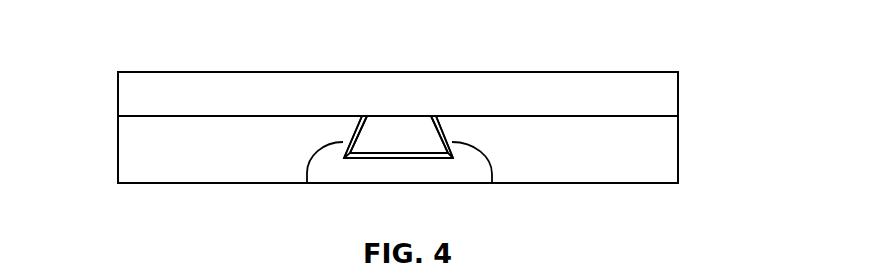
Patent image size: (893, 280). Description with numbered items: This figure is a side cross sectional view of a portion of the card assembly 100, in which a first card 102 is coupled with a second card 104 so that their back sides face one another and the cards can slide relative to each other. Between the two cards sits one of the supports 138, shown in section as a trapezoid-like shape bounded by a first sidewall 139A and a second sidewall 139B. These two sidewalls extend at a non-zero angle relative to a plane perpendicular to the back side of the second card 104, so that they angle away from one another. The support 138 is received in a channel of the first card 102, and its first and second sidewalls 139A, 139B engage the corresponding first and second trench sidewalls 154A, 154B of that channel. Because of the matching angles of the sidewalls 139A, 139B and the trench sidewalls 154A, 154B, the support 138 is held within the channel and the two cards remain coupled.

The assembly 100 is at (156, 30).
The first card 102 is at (665, 162).
The second card 104 is at (623, 87).
The support 138 is at (399, 126).
The first sidewall 139A is at (357, 132).
The second sidewall 139B is at (440, 131).
The first trench sidewall 154A is at (306, 183).
The second trench sidewall 154B is at (492, 183).